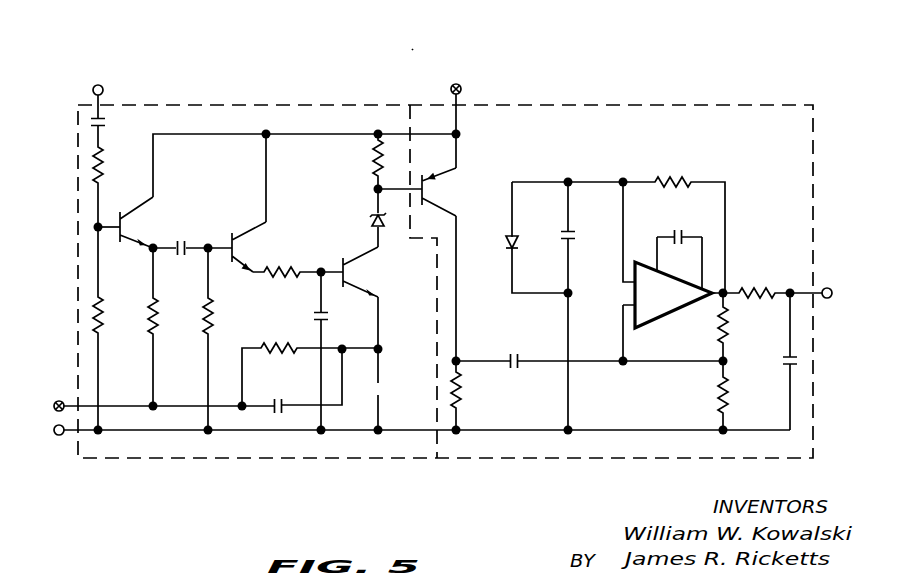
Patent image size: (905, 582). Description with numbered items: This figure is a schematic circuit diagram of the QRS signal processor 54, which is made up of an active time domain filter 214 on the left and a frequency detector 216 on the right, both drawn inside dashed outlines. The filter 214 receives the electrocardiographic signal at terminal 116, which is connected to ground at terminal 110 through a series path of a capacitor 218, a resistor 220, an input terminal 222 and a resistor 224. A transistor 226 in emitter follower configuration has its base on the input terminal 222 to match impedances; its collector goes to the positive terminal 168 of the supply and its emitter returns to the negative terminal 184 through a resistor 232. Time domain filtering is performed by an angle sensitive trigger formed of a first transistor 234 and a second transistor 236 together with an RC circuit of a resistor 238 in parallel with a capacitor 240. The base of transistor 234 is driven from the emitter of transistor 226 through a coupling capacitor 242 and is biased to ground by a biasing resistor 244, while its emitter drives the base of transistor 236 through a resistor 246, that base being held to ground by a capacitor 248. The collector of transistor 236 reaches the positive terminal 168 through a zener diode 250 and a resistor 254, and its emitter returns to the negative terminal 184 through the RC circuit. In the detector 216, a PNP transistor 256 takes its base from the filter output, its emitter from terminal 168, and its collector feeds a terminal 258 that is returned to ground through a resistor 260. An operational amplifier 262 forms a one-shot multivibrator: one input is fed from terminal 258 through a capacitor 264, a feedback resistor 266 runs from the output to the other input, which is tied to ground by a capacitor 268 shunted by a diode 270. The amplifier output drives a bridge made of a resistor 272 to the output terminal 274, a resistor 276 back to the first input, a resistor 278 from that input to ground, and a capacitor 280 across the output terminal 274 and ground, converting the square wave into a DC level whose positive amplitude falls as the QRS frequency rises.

The QRS signal processor 54 is at (412, 46).
The ground terminal 110 is at (54, 432).
The terminal 116 is at (99, 84).
The positive terminal 168 is at (458, 83).
The negative terminal 184 is at (58, 400).
The active time domain filter 214 is at (253, 108).
The frequency detector 216 is at (630, 110).
The capacitor 218 is at (106, 122).
The resistor 220 is at (93, 165).
The input terminal 222 is at (93, 226).
The resistor 224 is at (101, 318).
The transistor 226 is at (125, 222).
The resistor 232 is at (156, 320).
The first transistor 234 is at (236, 250).
The second transistor 236 is at (347, 271).
The resistor 238 is at (286, 344).
The capacitor 240 is at (278, 400).
The coupling capacitor 242 is at (180, 244).
The biasing resistor 244 is at (207, 300).
The resistor 246 is at (275, 268).
The capacitor 248 is at (327, 316).
The zener diode 250 is at (374, 219).
The resistor 254 is at (374, 162).
The PNP transistor 256 is at (426, 190).
The terminal 258 is at (458, 357).
The resistor 260 is at (461, 392).
The operational amplifier 262 is at (655, 320).
The capacitor 264 is at (512, 356).
The resistor 266 is at (664, 178).
The capacitor 268 is at (572, 236).
The diode 270 is at (516, 246).
The resistor 272 is at (749, 288).
The output terminal 274 is at (831, 288).
The resistor 276 is at (728, 325).
The resistor 278 is at (728, 393).
The capacitor 280 is at (786, 360).